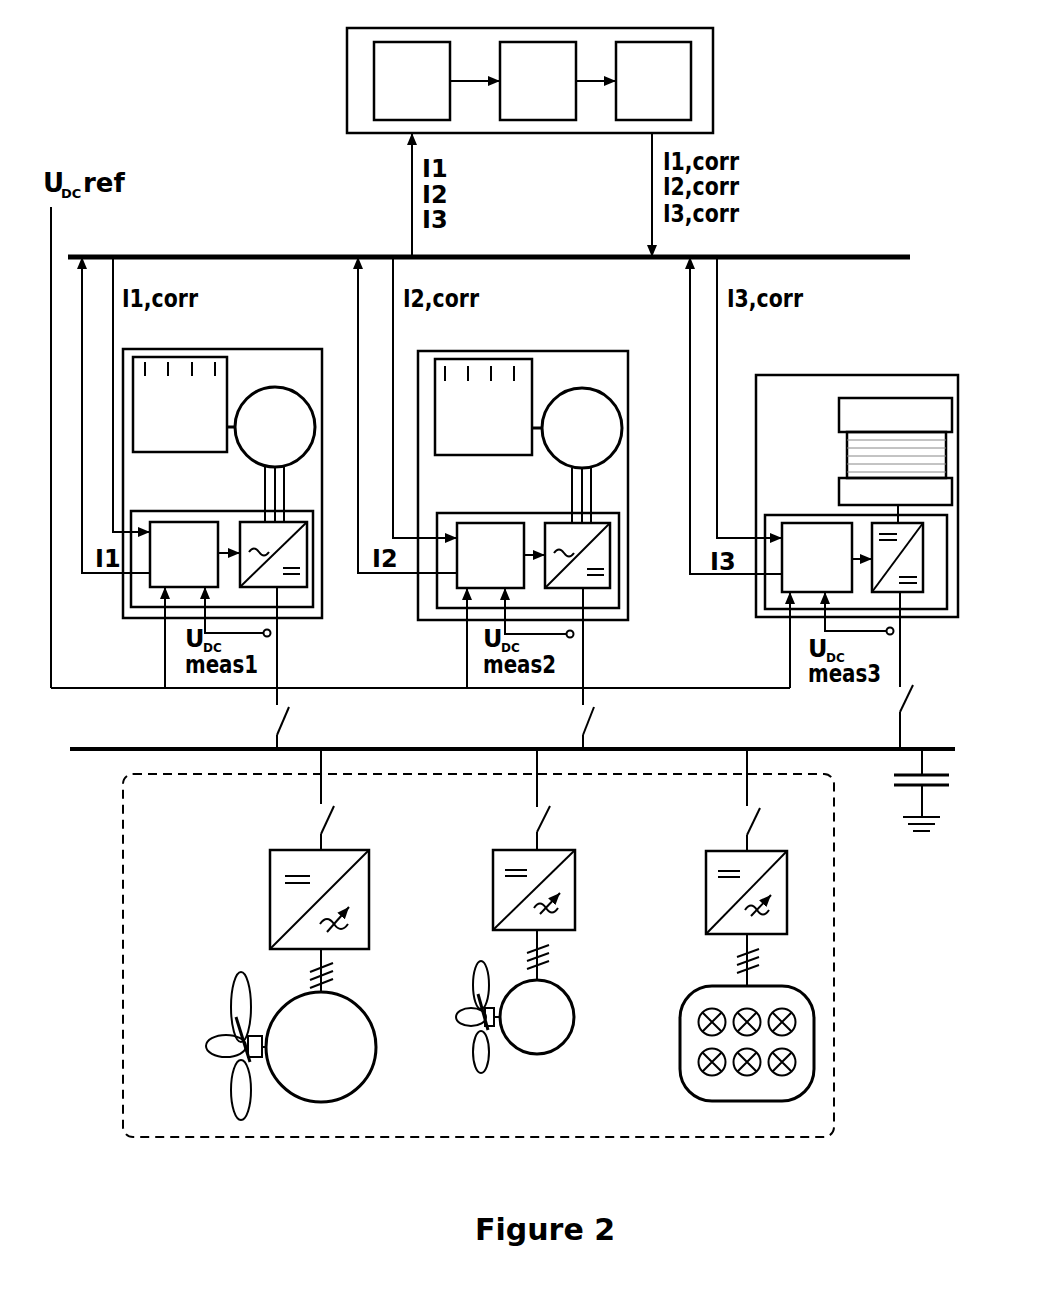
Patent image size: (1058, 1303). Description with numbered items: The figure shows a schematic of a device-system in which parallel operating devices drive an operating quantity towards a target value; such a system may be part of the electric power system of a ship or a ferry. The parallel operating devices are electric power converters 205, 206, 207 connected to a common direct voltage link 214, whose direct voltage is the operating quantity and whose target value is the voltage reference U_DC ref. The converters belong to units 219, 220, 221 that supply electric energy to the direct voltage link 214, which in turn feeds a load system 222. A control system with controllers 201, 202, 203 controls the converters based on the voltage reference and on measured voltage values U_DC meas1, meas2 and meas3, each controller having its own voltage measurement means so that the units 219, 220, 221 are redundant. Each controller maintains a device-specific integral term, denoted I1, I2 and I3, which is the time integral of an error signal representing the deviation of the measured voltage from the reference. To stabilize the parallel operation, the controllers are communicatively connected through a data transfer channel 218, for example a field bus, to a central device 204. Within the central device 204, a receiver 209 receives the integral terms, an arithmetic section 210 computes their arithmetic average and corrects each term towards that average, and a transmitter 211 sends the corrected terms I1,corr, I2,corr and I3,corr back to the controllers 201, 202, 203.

The central device 204 is at (498, 77).
The receiver 209 is at (393, 106).
The arithmetic section 210 is at (519, 106).
The transmitter 211 is at (634, 106).
The data transfer channel 218 is at (527, 257).
The unit 219 is at (223, 459).
The unit 220 is at (524, 464).
The unit 221 is at (857, 473).
The electric power converter 205 is at (222, 538).
The electric power converter 206 is at (528, 539).
The electric power converter 207 is at (856, 535).
The controller 201 is at (166, 574).
The controller 202 is at (472, 575).
The controller 203 is at (799, 578).
The direct voltage link 214 is at (667, 749).
The load system 222 is at (178, 825).